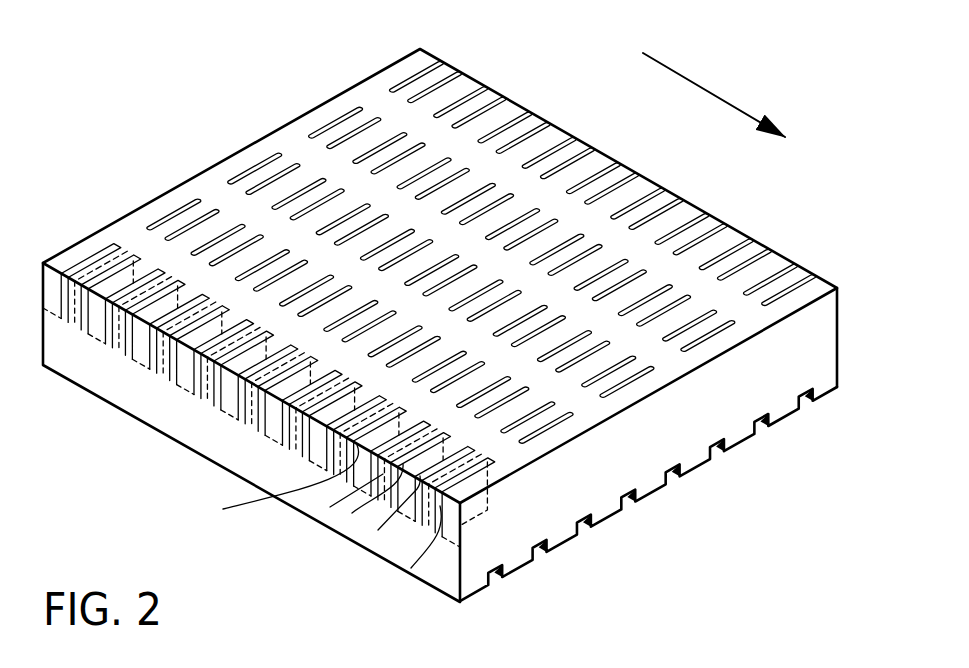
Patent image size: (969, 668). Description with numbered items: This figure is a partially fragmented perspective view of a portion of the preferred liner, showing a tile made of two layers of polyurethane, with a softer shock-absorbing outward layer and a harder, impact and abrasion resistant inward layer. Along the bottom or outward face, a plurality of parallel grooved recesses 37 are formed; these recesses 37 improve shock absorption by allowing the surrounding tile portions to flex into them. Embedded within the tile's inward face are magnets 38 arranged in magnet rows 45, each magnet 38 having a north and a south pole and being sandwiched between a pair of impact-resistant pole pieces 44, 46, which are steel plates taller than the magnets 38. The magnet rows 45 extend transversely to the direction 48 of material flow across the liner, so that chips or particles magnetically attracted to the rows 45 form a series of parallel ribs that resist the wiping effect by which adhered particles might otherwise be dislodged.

The grooved recesses 37 is at (582, 533).
The magnets 38 is at (173, 279).
The pole piece 44 is at (330, 507).
The magnet rows 45 is at (463, 59).
The pole piece 46 is at (411, 568).
The direction of material flow 48 is at (718, 95).